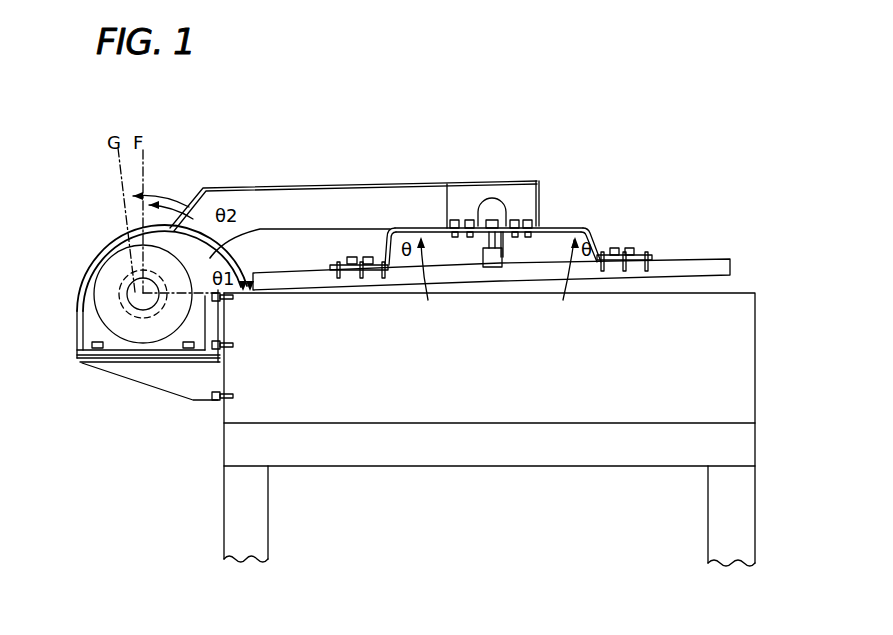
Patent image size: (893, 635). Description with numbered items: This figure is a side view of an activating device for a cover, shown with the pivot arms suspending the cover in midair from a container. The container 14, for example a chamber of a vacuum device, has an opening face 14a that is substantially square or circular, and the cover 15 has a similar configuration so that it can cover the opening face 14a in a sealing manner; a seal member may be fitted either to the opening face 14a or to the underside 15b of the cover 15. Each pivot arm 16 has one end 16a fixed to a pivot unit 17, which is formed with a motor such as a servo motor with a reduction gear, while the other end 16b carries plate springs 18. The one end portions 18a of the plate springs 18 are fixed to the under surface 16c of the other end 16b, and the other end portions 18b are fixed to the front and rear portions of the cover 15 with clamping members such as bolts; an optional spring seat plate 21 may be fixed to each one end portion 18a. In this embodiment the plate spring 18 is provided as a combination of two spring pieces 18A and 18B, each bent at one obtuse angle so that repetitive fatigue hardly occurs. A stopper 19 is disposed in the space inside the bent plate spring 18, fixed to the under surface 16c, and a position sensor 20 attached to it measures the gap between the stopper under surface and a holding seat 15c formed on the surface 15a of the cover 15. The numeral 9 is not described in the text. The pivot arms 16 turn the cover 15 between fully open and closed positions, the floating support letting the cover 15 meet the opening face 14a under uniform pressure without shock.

The vibration sieve unit 9 is at (410, 280).
The container 14 is at (296, 395).
The opening face 14a is at (693, 294).
The cover 15 is at (731, 267).
The surface of the cover 15a is at (703, 259).
The underside of the cover 15b is at (622, 277).
The holding seat 15c is at (478, 215).
The pivot arm 16 is at (283, 187).
The one end of the pivot arm 16a is at (172, 305).
The other end of the pivot arm 16b is at (525, 183).
The under surface of the pivot arm 16c is at (485, 262).
The pivot unit 17 is at (72, 278).
The plate spring 18 is at (408, 232).
The one end portion of the plate spring 18a is at (380, 262).
The other end portion of the plate spring 18b is at (447, 195).
The spring piece 18A is at (430, 280).
The spring piece 18B is at (568, 262).
The stopper 19 is at (493, 262).
The position sensor 20 is at (512, 262).
The spring seat plate 21 is at (355, 280).